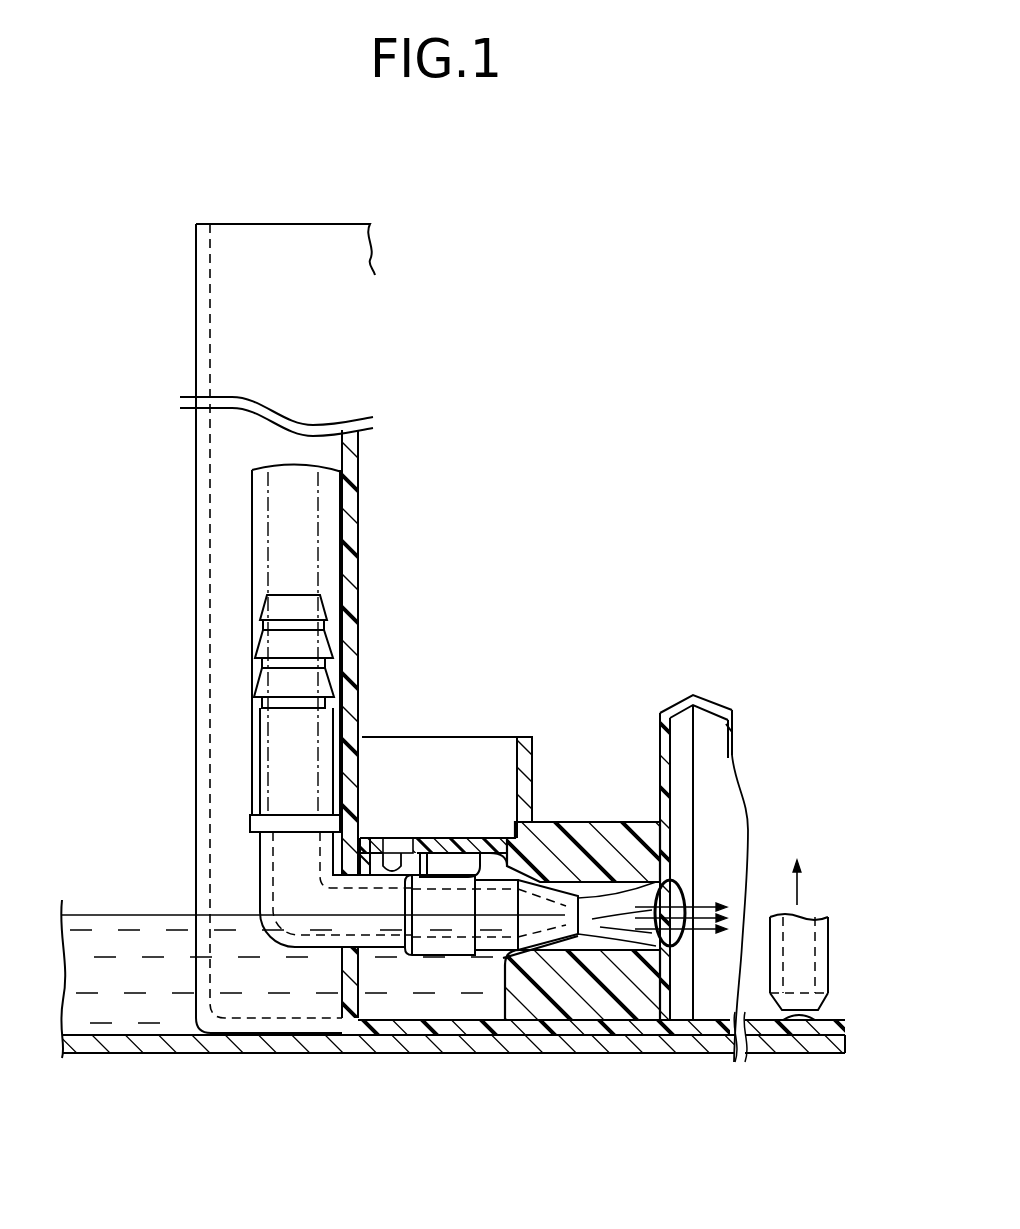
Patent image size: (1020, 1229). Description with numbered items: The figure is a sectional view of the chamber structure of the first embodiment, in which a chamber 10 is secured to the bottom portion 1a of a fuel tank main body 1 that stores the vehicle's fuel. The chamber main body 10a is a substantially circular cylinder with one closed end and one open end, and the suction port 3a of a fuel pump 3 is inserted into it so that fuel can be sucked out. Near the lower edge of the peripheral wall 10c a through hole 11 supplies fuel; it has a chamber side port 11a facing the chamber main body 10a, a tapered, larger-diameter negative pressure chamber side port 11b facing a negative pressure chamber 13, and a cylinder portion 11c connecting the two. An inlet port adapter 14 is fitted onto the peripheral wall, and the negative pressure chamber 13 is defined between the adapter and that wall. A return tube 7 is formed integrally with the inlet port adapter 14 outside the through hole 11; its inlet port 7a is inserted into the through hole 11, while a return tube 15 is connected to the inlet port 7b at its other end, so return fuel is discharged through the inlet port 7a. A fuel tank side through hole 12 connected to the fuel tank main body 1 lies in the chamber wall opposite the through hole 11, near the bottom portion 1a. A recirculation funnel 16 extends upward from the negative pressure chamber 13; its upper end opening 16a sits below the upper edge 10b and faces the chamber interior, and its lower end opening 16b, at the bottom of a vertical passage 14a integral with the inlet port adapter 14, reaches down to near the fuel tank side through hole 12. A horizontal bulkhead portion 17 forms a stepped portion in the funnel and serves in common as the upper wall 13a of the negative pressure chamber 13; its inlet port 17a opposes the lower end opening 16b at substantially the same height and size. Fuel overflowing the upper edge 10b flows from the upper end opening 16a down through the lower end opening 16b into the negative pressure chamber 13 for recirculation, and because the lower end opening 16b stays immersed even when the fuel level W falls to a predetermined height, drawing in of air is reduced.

The fuel tank main body 1 is at (103, 988).
The bottom portion 1a is at (160, 1034).
The fuel pump 3 is at (838, 935).
The suction port 3a is at (820, 1010).
The return tube 7 is at (255, 860).
The inlet port 7a is at (573, 887).
The inlet port 7b is at (256, 645).
The chamber 10 is at (192, 220).
The chamber main body 10a is at (192, 697).
The upper edge 10b is at (336, 222).
The peripheral wall 10c is at (197, 745).
The through hole 11 is at (645, 880).
The chamber side port 11a is at (675, 882).
The negative pressure chamber side port 11b is at (505, 966).
The cylinder portion 11c is at (642, 952).
The fuel tank side through hole 12 is at (344, 988).
The negative pressure chamber 13 is at (455, 995).
The upper wall 13a is at (510, 859).
The inlet port adapter 14 is at (455, 1055).
The vertical passage 14a is at (398, 840).
The return tube 15 is at (251, 507).
The recirculation funnel 16 is at (540, 742).
The upper end opening 16a is at (510, 737).
The lower end opening 16b is at (416, 925).
The horizontal bulkhead portion 17 is at (477, 856).
The inlet port 17a is at (398, 856).
The fuel level W is at (90, 913).